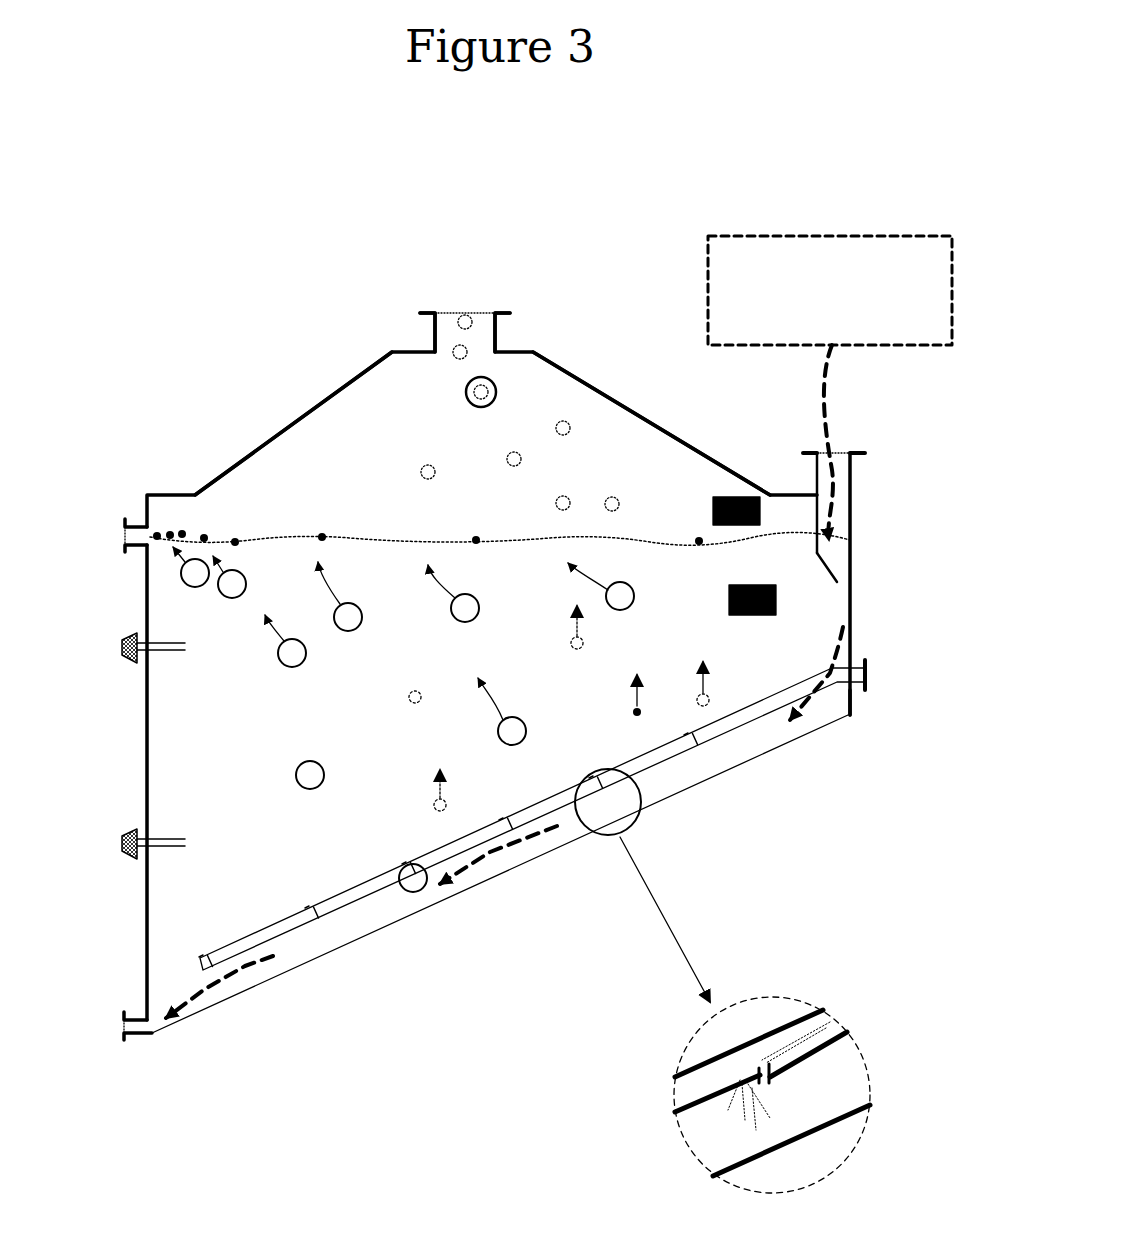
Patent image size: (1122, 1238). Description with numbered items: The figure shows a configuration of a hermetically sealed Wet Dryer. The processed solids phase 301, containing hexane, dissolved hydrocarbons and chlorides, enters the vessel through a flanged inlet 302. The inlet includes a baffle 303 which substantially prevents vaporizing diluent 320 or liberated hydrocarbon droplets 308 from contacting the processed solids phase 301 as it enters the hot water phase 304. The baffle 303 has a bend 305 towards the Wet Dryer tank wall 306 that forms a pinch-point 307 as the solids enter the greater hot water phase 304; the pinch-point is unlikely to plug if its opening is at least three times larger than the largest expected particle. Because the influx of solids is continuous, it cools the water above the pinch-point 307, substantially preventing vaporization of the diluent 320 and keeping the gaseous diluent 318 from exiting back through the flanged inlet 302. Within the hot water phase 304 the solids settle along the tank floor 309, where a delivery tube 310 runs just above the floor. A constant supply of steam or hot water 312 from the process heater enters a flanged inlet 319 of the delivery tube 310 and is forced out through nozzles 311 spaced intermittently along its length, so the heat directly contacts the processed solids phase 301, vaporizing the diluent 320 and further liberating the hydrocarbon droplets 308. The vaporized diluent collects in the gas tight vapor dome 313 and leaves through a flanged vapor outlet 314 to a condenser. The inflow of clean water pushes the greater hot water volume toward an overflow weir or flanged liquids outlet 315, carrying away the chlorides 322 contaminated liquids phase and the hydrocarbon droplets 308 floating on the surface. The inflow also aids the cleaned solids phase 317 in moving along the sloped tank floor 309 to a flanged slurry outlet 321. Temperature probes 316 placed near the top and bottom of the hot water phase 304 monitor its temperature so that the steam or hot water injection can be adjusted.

The processed solids phase 301 is at (708, 236).
The flanged inlet 302 is at (865, 453).
The baffle 303 is at (817, 513).
The hot water phase 304 is at (240, 722).
The bend 305 is at (827, 567).
The Wet Dryer tank wall 306 is at (850, 510).
The pinch-point 307 is at (840, 577).
The hydrocarbon droplets 308 is at (203, 537).
The tank floor 309 is at (755, 757).
The delivery tube 310 is at (388, 885).
The nozzles 311 is at (422, 893).
The steam or hot water 312 is at (870, 673).
The vapor dome 313 is at (325, 400).
The flanged vapor outlet 314 is at (510, 313).
The flanged liquids outlet 315 is at (125, 522).
The temperature probes 316 is at (122, 648).
The cleaned solids phase 317 is at (203, 993).
The gaseous diluent 318 is at (469, 381).
The flanged inlet of delivery tube 319 is at (850, 690).
The vaporizing diluent 320 is at (408, 703).
The flanged slurry outlet 321 is at (124, 1040).
The chlorides 322 is at (181, 571).